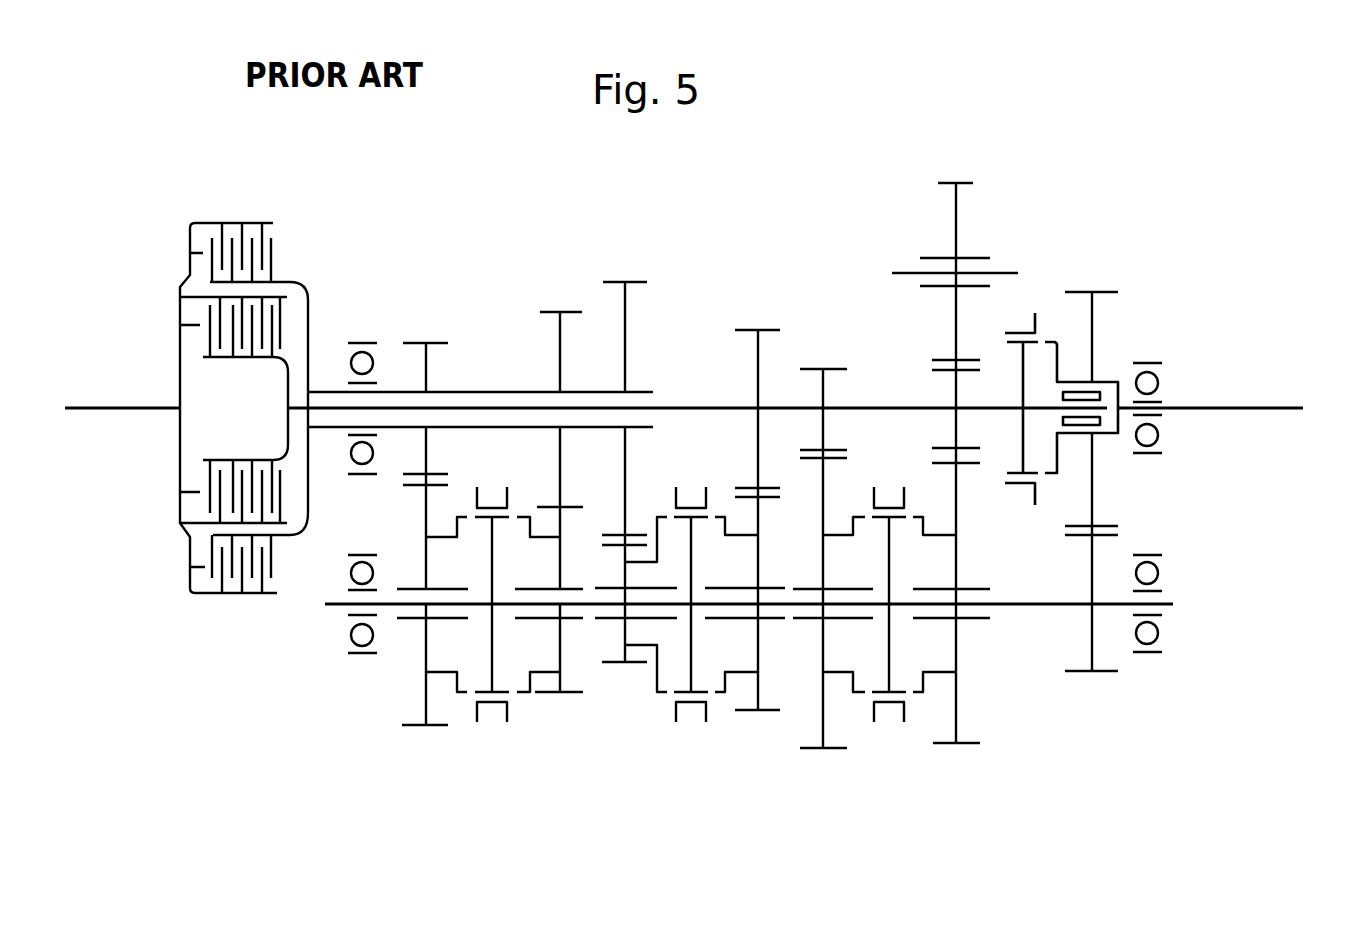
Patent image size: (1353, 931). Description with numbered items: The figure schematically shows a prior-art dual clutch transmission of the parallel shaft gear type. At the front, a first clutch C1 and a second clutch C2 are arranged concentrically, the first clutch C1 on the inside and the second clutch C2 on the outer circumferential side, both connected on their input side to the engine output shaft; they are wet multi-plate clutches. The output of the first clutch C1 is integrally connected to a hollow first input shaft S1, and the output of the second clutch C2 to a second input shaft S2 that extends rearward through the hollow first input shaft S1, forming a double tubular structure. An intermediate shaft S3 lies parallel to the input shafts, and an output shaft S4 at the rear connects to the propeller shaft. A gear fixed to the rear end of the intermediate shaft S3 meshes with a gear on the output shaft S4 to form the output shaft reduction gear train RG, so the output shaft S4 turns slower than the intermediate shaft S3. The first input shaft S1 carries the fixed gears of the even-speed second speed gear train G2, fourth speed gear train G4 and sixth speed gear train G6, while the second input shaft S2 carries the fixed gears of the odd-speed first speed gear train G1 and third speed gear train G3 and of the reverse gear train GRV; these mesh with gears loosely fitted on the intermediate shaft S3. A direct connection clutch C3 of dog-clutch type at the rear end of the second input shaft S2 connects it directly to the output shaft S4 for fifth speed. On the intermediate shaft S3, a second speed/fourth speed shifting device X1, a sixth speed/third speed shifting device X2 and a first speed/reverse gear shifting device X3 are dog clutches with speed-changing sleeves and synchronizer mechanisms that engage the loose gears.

The first clutch C1 is at (255, 238).
The second clutch C2 is at (215, 320).
The direct connection clutch C3 is at (1025, 323).
The first input shaft S1 is at (484, 388).
The second input shaft S2 is at (681, 406).
The intermediate shaft S3 is at (330, 612).
The output shaft S4 is at (1212, 406).
The first speed gear train G1 is at (813, 752).
The second speed gear train G2 is at (417, 727).
The third speed gear train G3 is at (750, 713).
The fourth speed gear train G4 is at (550, 695).
The sixth speed gear train G6 is at (613, 664).
The reverse gear train GRV is at (945, 745).
The output shaft reduction gear train RG is at (1083, 673).
The second speed/fourth speed shifting device X1 is at (495, 723).
The sixth speed/third speed shifting device X2 is at (690, 723).
The first speed/reverse gear shifting device X3 is at (887, 713).